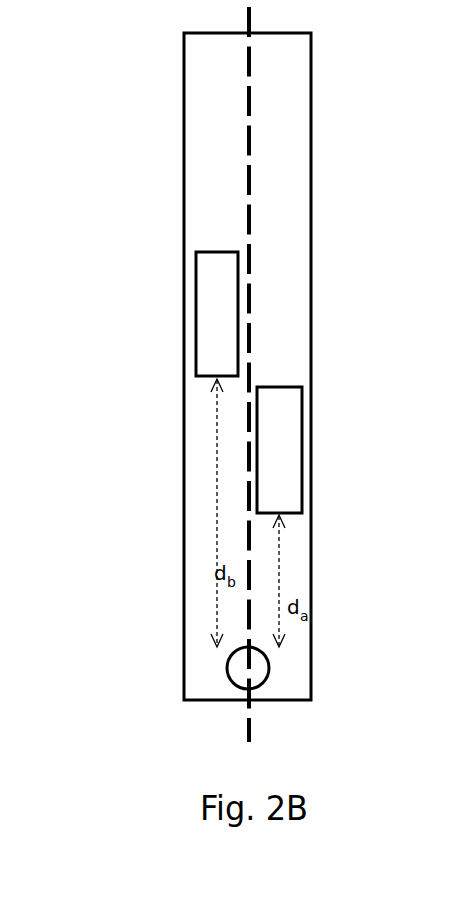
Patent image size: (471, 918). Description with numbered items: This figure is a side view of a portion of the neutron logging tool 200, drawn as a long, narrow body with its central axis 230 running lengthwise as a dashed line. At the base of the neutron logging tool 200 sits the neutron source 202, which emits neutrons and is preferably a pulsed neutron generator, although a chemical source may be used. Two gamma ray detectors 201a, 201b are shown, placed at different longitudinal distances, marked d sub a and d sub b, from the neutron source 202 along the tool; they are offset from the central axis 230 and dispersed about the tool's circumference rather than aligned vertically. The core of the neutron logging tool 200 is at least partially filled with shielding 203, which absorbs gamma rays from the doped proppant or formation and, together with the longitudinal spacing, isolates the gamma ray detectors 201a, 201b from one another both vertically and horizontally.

The neutron logging tool 200 is at (166, 165).
The central axis 230 is at (250, 116).
The shielding 203 is at (283, 345).
The gamma ray detector 201b is at (196, 353).
The gamma ray detector 201a is at (302, 430).
The neutron source 202 is at (258, 688).